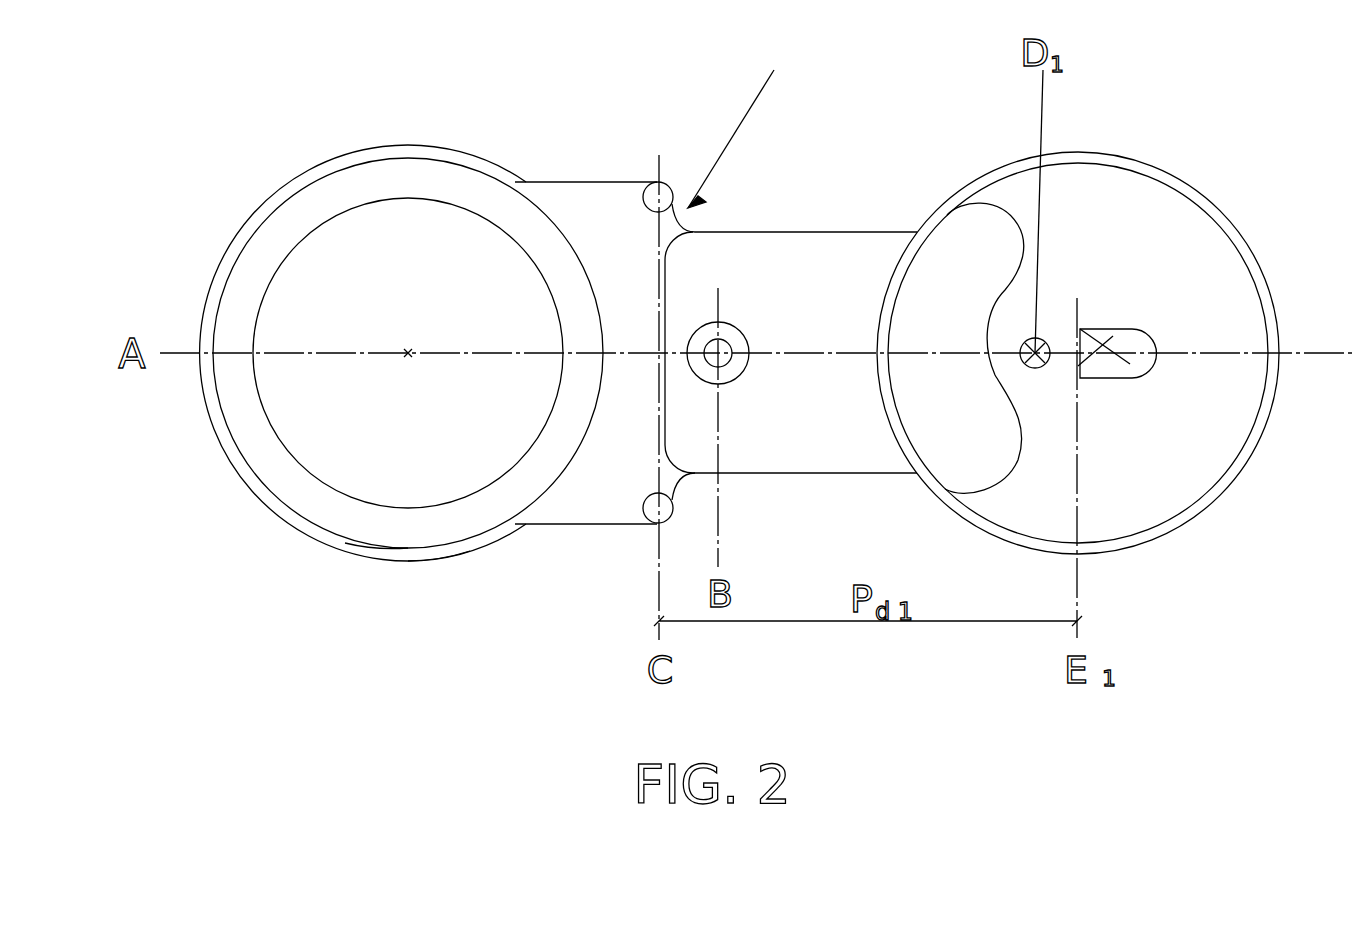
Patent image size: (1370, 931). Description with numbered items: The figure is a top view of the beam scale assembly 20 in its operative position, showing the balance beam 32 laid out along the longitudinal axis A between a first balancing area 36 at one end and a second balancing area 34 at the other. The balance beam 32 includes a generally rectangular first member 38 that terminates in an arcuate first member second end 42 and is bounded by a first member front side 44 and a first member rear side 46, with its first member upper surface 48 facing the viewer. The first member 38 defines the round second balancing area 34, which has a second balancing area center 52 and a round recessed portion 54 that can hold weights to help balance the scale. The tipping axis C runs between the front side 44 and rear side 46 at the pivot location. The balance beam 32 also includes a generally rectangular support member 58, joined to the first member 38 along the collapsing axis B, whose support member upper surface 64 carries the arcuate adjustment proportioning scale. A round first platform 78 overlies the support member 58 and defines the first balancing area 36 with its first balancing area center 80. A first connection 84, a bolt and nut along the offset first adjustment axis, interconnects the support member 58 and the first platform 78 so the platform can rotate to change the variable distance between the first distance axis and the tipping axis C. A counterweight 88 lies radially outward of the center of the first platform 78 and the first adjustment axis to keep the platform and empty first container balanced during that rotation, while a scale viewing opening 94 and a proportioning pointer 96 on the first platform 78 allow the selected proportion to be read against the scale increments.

The beam scale assembly 20 is at (743, 117).
The balance beam 32 is at (836, 232).
The second balancing area 34 is at (344, 538).
The first balancing area 36 is at (1173, 517).
The first member 38 is at (560, 524).
The first member second end 42 is at (204, 300).
The first member front side 44 is at (413, 561).
The first member rear side 46 is at (413, 145).
The first member upper surface 48 is at (612, 228).
The second balancing area center 52 is at (408, 353).
The round recessed portion 54 is at (313, 418).
The support member 58 is at (875, 473).
The support member upper surface 64 is at (792, 445).
The first platform 78 is at (1243, 470).
The first balancing area center 80 is at (1080, 353).
The first connection 84 is at (1037, 353).
The counterweight 88 is at (988, 258).
The scale viewing opening 94 is at (1113, 336).
The proportioning pointer 96 is at (1130, 364).